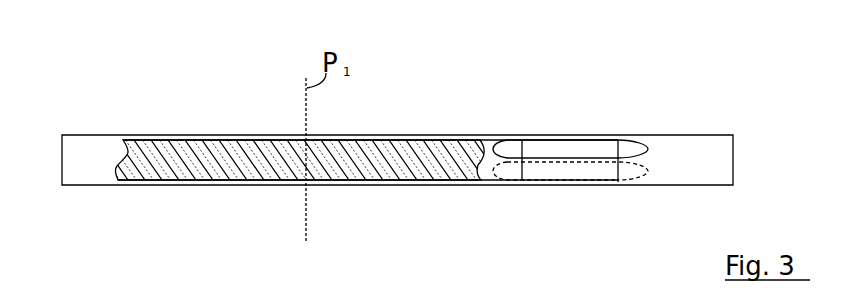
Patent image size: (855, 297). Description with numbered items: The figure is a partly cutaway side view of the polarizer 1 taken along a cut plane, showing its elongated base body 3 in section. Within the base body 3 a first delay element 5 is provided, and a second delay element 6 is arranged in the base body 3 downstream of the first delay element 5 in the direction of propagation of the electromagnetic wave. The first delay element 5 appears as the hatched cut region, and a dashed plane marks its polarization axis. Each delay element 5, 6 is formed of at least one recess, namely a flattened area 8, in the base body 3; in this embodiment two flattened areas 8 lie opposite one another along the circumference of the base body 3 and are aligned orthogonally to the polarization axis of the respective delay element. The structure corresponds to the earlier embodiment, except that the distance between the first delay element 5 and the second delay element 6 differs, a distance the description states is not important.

The polarizer 1 is at (100, 63).
The base body 3 is at (87, 179).
The first delay element 5 is at (362, 121).
The second delay element 6 is at (589, 121).
The flattened area 8 is at (218, 140).